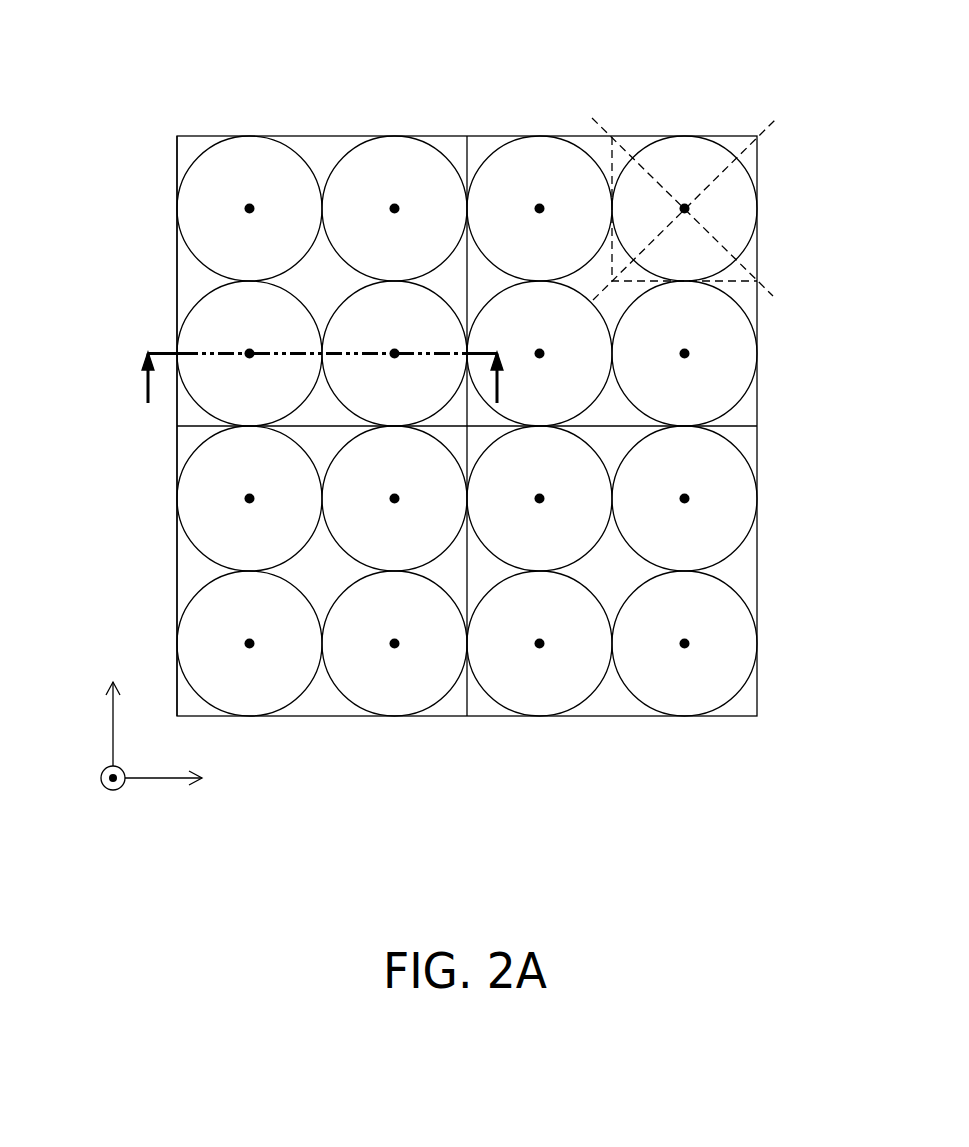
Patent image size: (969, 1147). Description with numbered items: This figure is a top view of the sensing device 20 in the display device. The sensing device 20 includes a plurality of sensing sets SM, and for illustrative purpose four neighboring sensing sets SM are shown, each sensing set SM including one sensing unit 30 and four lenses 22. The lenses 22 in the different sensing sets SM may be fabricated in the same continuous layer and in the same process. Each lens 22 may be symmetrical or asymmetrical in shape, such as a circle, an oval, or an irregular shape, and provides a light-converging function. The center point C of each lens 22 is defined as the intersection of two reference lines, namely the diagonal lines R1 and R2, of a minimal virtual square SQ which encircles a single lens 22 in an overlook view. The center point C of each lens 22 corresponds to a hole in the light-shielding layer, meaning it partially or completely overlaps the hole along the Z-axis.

The sensing device 20 is at (710, 78).
The lens 22 is at (263, 188).
The sensing unit 30 is at (320, 150).
The sensing set SM is at (177, 158).
The minimal virtual square SQ is at (612, 160).
The diagonal line R1 is at (703, 202).
The diagonal line R2 is at (702, 217).
The center point C is at (690, 208).